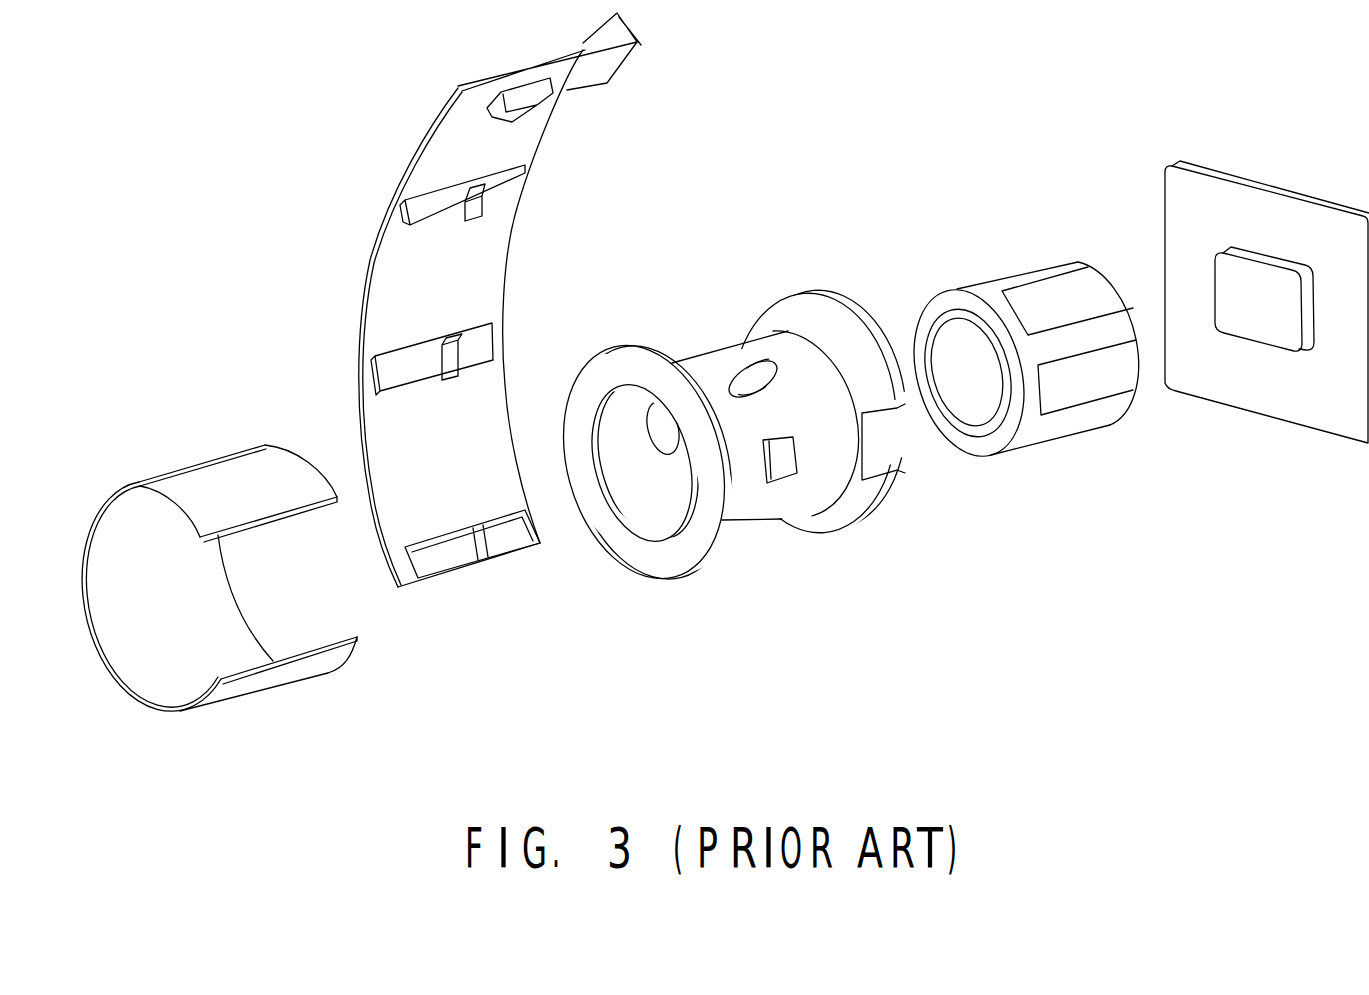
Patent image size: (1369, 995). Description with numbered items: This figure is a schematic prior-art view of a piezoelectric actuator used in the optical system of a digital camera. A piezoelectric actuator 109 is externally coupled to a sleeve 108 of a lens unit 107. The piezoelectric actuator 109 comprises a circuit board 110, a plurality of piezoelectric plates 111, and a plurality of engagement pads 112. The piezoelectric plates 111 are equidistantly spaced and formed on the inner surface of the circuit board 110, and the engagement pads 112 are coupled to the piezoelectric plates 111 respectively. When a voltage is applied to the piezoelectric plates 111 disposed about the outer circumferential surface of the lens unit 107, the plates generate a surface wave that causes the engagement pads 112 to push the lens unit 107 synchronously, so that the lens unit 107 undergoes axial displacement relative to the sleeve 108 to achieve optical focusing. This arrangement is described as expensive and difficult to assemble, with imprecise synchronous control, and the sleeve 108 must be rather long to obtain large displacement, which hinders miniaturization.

The lens unit 107 is at (985, 287).
The sleeve 108 is at (732, 507).
The piezoelectric actuator 109 is at (372, 199).
The circuit board 110 is at (467, 288).
The piezoelectric plates 111 is at (503, 186).
The engagement pads 112 is at (472, 210).